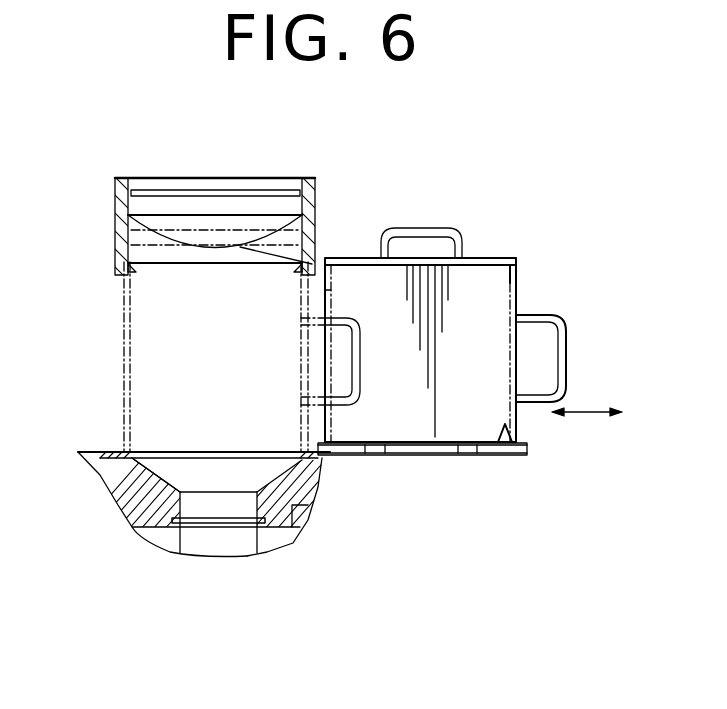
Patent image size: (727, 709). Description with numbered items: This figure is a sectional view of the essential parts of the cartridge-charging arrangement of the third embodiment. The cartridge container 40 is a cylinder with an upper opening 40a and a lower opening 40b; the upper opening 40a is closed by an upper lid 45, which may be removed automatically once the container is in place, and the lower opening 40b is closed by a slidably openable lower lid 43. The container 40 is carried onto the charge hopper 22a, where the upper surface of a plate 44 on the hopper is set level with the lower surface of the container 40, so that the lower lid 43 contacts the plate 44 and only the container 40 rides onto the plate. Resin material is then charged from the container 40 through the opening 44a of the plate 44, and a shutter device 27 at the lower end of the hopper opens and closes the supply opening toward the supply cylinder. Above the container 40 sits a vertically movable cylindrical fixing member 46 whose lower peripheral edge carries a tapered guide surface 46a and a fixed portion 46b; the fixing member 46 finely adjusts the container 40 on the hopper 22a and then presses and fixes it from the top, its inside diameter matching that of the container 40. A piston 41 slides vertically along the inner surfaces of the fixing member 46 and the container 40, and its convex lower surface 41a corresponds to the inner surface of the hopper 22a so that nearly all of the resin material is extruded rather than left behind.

The fixing member 46 is at (314, 220).
The piston 41 is at (254, 213).
The tapered guide surface 46a is at (128, 271).
The fixed portion 46b is at (300, 272).
The cartridge container 40 is at (478, 300).
The upper lid 45 is at (432, 228).
The upper opening 40a is at (496, 265).
The lower surface 41a is at (331, 292).
The lower opening 40b is at (506, 432).
The lower lid 43 is at (487, 457).
The plate 44 is at (100, 477).
The opening 44a is at (147, 449).
The charge hopper 22a is at (133, 497).
The shutter device 27 is at (262, 524).